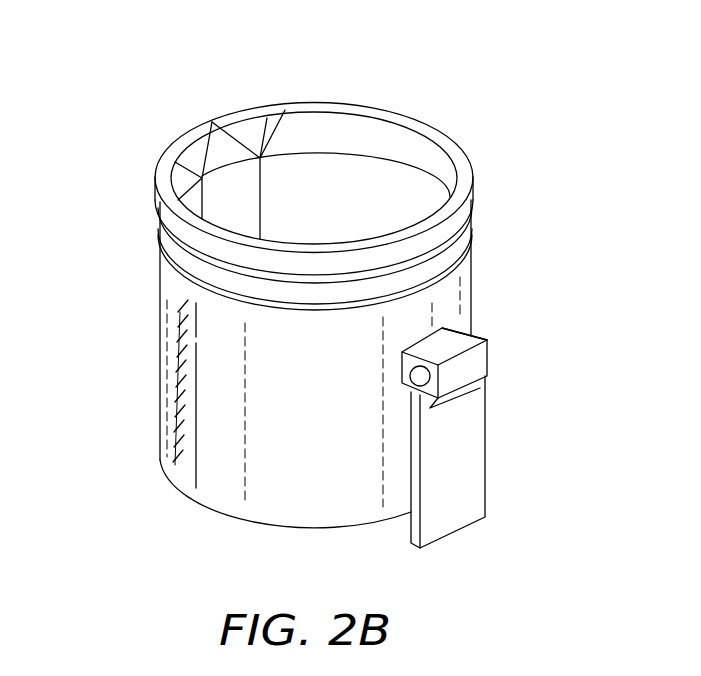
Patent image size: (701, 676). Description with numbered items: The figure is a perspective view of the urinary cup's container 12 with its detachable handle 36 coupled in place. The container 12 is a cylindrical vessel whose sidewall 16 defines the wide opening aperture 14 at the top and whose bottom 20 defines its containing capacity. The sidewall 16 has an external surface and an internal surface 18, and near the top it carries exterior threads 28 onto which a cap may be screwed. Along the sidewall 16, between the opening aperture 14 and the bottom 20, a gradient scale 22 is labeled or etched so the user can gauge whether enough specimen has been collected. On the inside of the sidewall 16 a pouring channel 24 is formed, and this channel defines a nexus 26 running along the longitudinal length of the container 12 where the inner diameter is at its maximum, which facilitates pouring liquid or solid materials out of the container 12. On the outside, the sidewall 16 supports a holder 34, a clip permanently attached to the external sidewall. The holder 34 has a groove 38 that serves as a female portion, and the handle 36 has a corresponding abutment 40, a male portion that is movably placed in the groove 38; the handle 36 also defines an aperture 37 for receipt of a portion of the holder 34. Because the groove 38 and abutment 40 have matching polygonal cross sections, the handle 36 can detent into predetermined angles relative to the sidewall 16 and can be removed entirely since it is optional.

The container 12 is at (343, 436).
The opening aperture 14 is at (430, 165).
The sidewall 16 is at (470, 280).
The internal surface 18 is at (398, 188).
The bottom 20 is at (220, 517).
The gradient scale 22 is at (176, 408).
The pouring channel 24 is at (214, 188).
The nexus 26 is at (212, 122).
The exterior threads 28 is at (156, 197).
The holder 34 is at (472, 370).
The handle 36 is at (458, 477).
The aperture 37 is at (437, 408).
The groove 38 is at (446, 329).
The abutment 40 is at (414, 393).